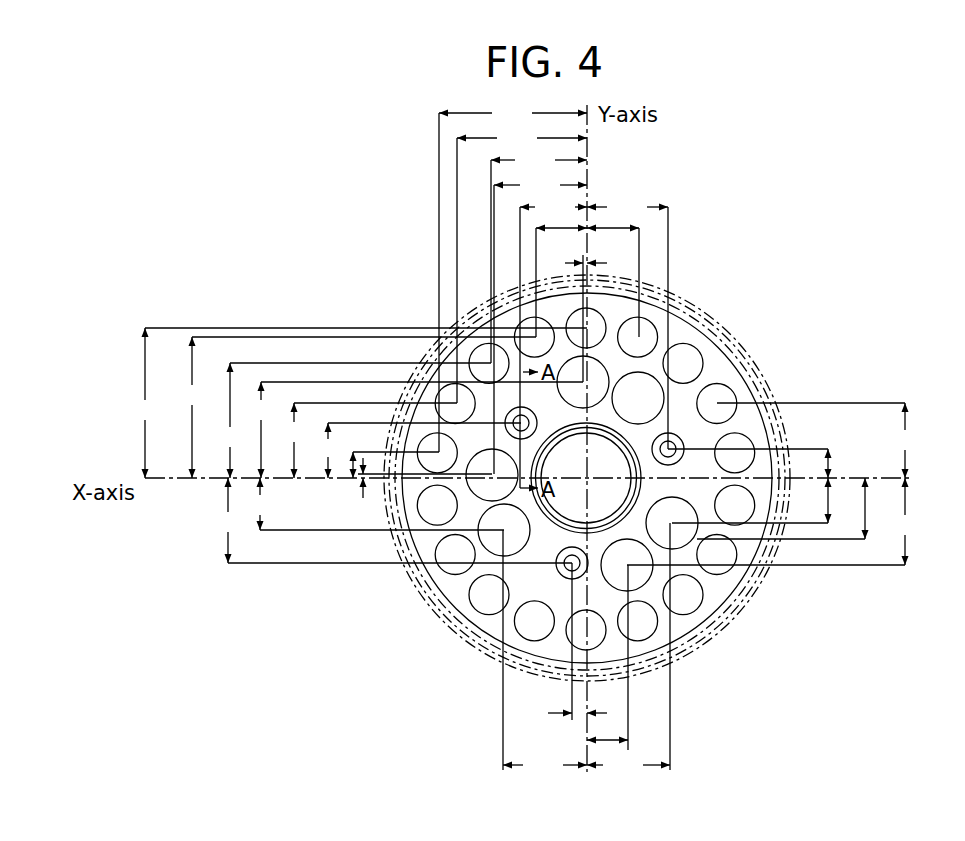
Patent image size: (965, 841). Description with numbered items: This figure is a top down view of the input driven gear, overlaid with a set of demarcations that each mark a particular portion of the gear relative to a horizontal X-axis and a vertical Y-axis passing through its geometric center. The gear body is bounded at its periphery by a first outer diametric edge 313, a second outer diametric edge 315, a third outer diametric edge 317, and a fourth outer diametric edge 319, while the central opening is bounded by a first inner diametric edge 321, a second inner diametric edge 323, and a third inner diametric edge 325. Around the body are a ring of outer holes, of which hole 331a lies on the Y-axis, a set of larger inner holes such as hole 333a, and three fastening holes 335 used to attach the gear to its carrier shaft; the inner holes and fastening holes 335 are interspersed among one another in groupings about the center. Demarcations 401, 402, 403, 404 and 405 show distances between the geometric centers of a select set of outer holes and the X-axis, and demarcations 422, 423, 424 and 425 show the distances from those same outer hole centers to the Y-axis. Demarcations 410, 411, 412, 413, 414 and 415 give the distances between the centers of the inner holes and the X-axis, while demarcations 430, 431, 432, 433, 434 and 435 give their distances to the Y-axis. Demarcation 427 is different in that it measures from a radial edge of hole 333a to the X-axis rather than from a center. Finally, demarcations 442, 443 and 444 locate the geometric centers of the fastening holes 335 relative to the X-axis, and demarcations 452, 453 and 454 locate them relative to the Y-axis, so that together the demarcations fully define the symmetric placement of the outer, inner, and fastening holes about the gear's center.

The first outer diametric edge 313 is at (768, 387).
The second outer diametric edge 315 is at (748, 362).
The third outer diametric edge 317 is at (725, 343).
The fourth outer diametric edge 319 is at (695, 328).
The first inner diametric edge 321 is at (542, 516).
The second inner diametric edge 323 is at (552, 522).
The third inner diametric edge 325 is at (563, 532).
The outer hole 331a is at (603, 316).
The inner hole 333a is at (684, 548).
The fastening holes 335 is at (678, 462).
The demarcation 401 is at (357, 403).
The demarcation 402 is at (354, 407).
The demarcation 403 is at (351, 420).
The demarcation 404 is at (367, 440).
The demarcation 405 is at (353, 452).
The demarcation 410 is at (413, 430).
The demarcation 411 is at (363, 498).
The demarcation 412 is at (374, 504).
The demarcation 413 is at (820, 440).
The demarcation 414 is at (750, 500).
The demarcation 415 is at (776, 521).
The demarcation 422 is at (561, 282).
The demarcation 423 is at (539, 256).
The demarcation 424 is at (522, 265).
The demarcation 425 is at (513, 277).
The demarcation 427 is at (781, 508).
The demarcation 430 is at (605, 317).
The demarcation 431 is at (540, 324).
The demarcation 432 is at (545, 654).
The demarcation 433 is at (613, 282).
The demarcation 434 is at (628, 650).
The demarcation 435 is at (627, 660).
The demarcation 442 is at (416, 450).
The demarcation 443 is at (391, 520).
The demarcation 444 is at (748, 462).
The demarcation 452 is at (553, 208).
The demarcation 453 is at (558, 644).
The demarcation 454 is at (627, 322).